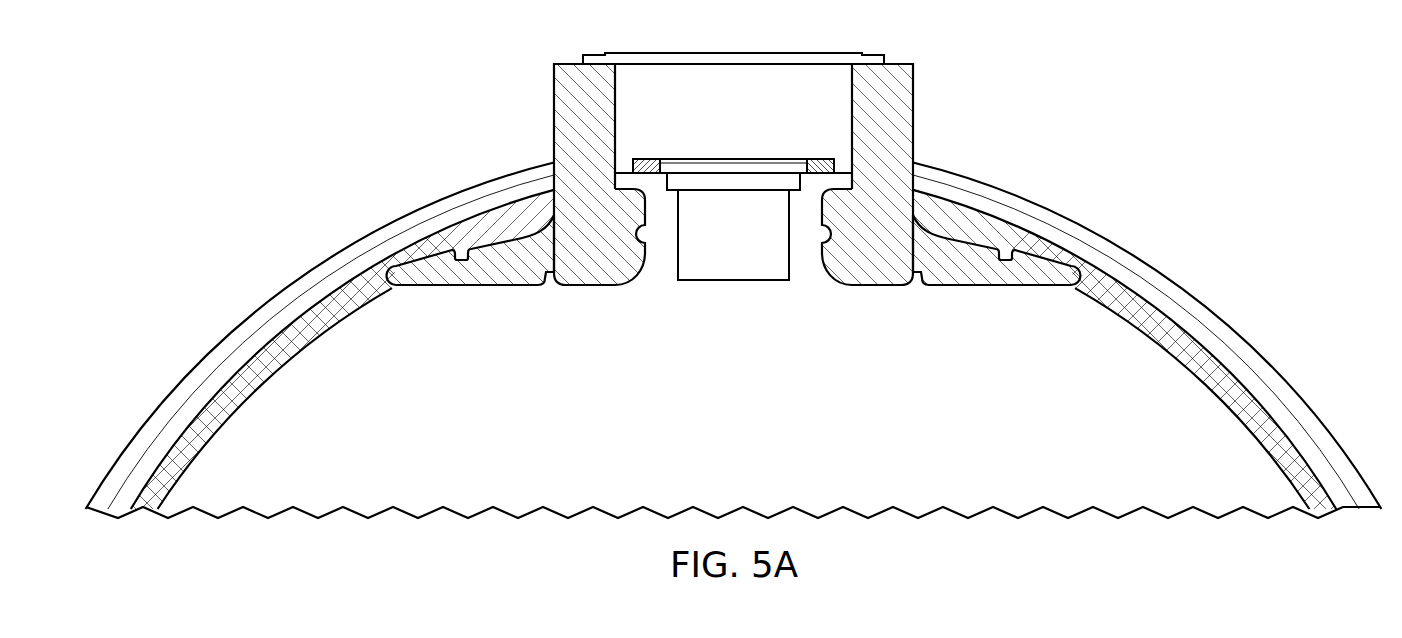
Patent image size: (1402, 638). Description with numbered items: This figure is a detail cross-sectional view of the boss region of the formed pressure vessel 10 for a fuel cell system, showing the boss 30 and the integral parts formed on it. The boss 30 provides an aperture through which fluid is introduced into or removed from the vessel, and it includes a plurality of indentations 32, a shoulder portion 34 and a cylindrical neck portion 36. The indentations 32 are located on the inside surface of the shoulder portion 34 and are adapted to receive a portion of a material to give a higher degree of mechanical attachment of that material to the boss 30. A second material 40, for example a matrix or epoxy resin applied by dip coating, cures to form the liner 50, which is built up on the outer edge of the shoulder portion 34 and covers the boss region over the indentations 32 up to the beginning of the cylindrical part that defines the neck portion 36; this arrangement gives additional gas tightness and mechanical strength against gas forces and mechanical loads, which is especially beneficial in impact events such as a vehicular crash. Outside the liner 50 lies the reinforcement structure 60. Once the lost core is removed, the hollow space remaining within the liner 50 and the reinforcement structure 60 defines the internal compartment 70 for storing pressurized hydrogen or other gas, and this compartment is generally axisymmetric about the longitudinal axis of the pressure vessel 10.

The pressure vessel 10 is at (311, 138).
The boss 30 is at (554, 72).
The indentations 32 is at (633, 233).
The shoulder portion 34 is at (517, 250).
The neck portion 36 is at (578, 84).
The second material 40 is at (356, 295).
The liner 50 is at (247, 357).
The reinforcement structure 60 is at (290, 298).
The internal compartment 70 is at (758, 417).